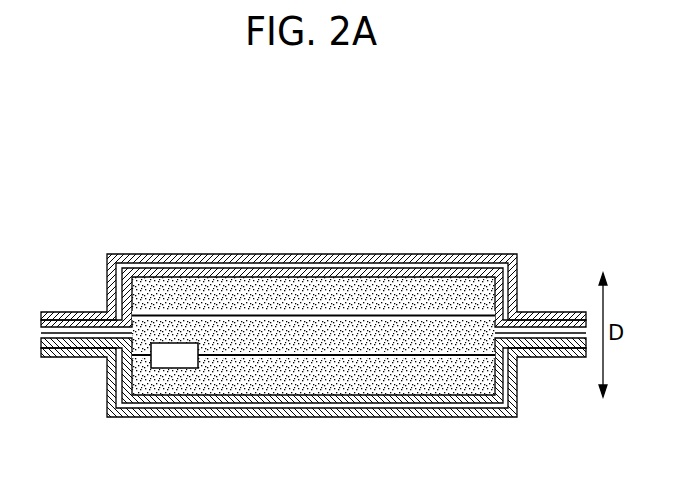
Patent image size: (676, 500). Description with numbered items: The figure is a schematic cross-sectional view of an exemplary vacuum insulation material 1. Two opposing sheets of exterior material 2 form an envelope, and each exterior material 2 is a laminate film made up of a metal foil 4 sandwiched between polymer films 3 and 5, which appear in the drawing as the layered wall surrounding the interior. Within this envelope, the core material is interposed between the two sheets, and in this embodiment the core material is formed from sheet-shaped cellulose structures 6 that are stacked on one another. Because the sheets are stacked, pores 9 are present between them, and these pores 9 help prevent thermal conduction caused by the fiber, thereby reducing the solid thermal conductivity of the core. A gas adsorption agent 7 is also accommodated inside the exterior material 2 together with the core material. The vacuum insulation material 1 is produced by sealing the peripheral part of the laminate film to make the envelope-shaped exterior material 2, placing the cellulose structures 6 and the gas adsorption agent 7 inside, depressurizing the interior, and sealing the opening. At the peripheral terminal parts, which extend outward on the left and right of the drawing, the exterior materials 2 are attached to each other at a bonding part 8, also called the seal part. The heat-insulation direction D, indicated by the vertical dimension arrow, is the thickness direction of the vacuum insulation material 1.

The vacuum insulation material 1 is at (504, 169).
The exterior material 2 is at (335, 193).
The polymer film 3 is at (420, 255).
The metal foil 4 is at (382, 268).
The polymer film 5 is at (340, 277).
The cellulose structure 6 is at (257, 292).
The gas adsorption agent 7 is at (173, 368).
The bonding part 8 is at (558, 312).
The pores 9 is at (180, 315).